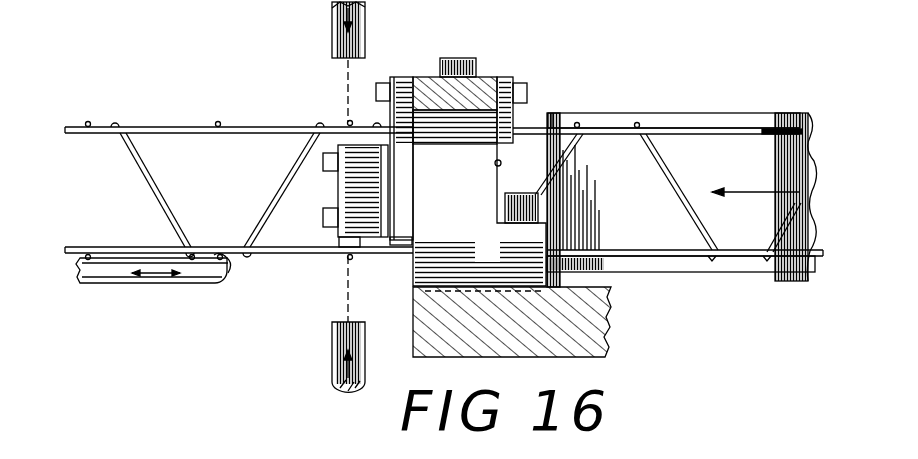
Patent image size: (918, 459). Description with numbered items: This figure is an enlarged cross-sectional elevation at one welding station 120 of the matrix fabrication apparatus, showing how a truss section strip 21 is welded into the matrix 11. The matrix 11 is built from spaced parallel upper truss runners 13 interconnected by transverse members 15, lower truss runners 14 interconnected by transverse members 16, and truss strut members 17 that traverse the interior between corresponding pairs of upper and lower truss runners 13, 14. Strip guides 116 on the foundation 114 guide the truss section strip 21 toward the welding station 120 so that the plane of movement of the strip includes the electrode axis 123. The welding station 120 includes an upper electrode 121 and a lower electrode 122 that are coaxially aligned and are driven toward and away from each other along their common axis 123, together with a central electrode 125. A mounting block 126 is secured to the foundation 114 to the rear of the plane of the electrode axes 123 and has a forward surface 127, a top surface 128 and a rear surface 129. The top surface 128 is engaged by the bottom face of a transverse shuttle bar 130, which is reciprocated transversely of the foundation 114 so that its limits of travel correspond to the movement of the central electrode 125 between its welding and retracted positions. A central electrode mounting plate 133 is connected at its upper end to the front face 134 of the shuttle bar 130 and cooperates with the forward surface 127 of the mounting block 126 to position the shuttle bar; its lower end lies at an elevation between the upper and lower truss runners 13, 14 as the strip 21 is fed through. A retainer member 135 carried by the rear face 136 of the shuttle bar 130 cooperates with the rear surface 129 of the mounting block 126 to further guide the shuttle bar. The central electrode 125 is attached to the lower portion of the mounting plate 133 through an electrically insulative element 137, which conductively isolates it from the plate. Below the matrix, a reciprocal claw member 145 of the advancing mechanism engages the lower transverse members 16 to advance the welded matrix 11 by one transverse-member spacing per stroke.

The matrix 11 is at (162, 118).
The upper truss runner 13 is at (592, 126).
The lower truss runner 14 is at (740, 258).
The transverse member 15 is at (88, 124).
The transverse member 16 is at (88, 282).
The truss strut member 17 is at (664, 166).
The truss section strip 21 is at (773, 128).
The foundation 114 is at (608, 344).
The strip guide 116 is at (740, 114).
The welding station 120 is at (578, 22).
The upper electrode 121 is at (364, 24).
The lower electrode 122 is at (334, 362).
The electrode axis 123 is at (346, 83).
The central electrode 125 is at (340, 218).
The mounting block 126 is at (500, 261).
The forward surface 127 is at (414, 192).
The top surface 128 is at (456, 112).
The rear surface 129 is at (496, 162).
The shuttle bar 130 is at (484, 76).
The central electrode mounting plate 133 is at (396, 76).
The front face 134 is at (425, 76).
The retainer member 135 is at (512, 78).
The rear face 136 is at (522, 112).
The electrically insulative element 137 is at (402, 250).
The claw member 145 is at (180, 284).